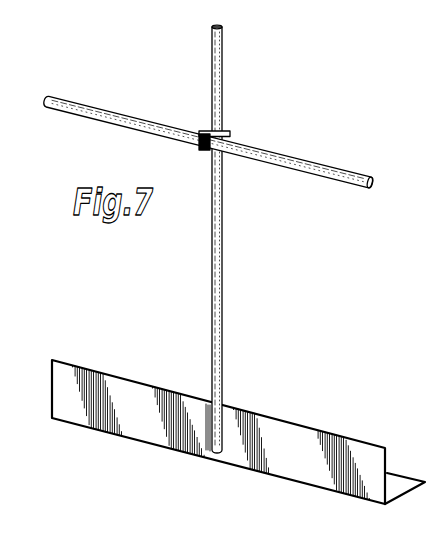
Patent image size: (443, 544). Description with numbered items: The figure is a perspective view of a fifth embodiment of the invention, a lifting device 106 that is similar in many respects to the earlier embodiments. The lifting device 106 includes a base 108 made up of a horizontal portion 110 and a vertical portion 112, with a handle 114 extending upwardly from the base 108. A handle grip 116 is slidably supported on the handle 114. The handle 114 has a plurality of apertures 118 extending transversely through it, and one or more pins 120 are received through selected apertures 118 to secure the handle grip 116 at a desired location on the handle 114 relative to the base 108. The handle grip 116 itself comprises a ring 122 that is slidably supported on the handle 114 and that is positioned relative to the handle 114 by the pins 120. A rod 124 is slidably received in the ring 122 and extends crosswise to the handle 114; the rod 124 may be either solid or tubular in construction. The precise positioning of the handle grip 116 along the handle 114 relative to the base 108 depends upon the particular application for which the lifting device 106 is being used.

The lifting device 106 is at (163, 51).
The base 108 is at (131, 375).
The horizontal portion 110 is at (402, 480).
The vertical portion 112 is at (305, 458).
The handle 114 is at (187, 296).
The handle grip 116 is at (331, 163).
The apertures 118 is at (222, 70).
The pins 120 is at (207, 130).
The ring 122 is at (205, 143).
The rod 124 is at (90, 118).